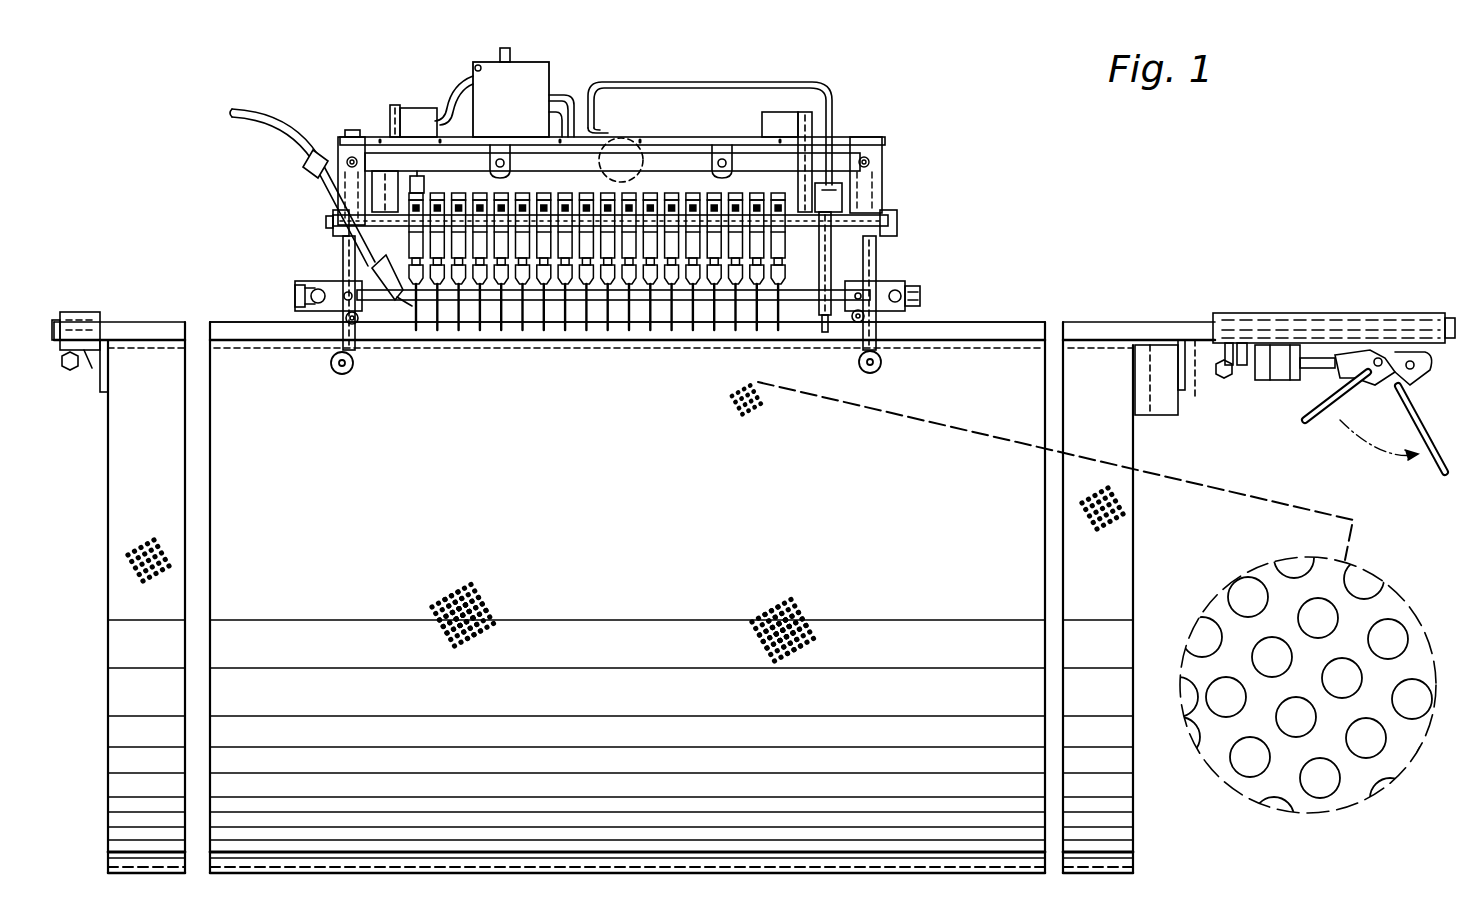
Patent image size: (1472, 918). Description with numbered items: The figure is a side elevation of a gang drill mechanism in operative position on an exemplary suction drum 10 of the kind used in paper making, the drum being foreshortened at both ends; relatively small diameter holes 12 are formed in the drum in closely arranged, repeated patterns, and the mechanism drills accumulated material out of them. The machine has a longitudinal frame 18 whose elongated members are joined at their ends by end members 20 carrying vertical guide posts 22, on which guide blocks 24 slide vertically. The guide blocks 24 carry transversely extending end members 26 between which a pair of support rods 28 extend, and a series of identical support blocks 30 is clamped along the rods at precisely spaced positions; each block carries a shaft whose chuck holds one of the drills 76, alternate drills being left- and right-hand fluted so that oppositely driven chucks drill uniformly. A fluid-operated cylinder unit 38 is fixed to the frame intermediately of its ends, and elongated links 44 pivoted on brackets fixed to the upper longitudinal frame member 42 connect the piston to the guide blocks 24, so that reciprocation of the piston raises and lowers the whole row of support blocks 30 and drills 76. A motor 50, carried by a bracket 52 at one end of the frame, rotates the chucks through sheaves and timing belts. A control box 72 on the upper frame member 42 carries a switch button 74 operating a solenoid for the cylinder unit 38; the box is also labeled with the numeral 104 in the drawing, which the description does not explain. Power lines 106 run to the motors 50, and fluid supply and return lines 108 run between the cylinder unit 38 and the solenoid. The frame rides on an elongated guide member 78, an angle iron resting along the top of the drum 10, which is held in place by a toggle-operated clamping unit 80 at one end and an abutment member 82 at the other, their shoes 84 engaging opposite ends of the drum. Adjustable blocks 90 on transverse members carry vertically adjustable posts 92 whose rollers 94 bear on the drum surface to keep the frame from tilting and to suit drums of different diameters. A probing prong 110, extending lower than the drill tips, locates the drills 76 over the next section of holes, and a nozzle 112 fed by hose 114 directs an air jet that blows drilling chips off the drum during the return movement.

The suction drum 10 is at (1262, 792).
The holes 12 is at (755, 408).
The longitudinal frame 18 is at (845, 126).
The end members 20 is at (400, 303).
The vertical guide posts 22 is at (345, 252).
The guide blocks 24 is at (346, 140).
The transversely extending end members 26 is at (333, 221).
The support rods 28 is at (358, 165).
The support blocks 30 is at (462, 245).
The fluid-operated cylinder unit 38 is at (622, 138).
The upper longitudinal frame member 42 is at (808, 130).
The elongated links 44 is at (690, 160).
The motor 50 is at (418, 108).
The bracket 52 is at (395, 118).
The control box 72 is at (480, 62).
The switch button 74 is at (510, 50).
The drills 76 is at (545, 320).
The guide member 78 is at (997, 325).
The toggle-operated clamping unit 80 is at (1282, 380).
The abutment member 82 is at (80, 315).
The shoes 84 is at (108, 368).
The adjustable blocks 90 is at (296, 296).
The vertical posts 92 is at (345, 335).
The rollers 94 is at (345, 378).
The control box 104 is at (478, 96).
The power lines 106 is at (452, 70).
The fluid supply and return lines 108 is at (566, 90).
The probing prong 110 is at (817, 333).
The nozzle 112 is at (412, 306).
The hose 114 is at (232, 114).